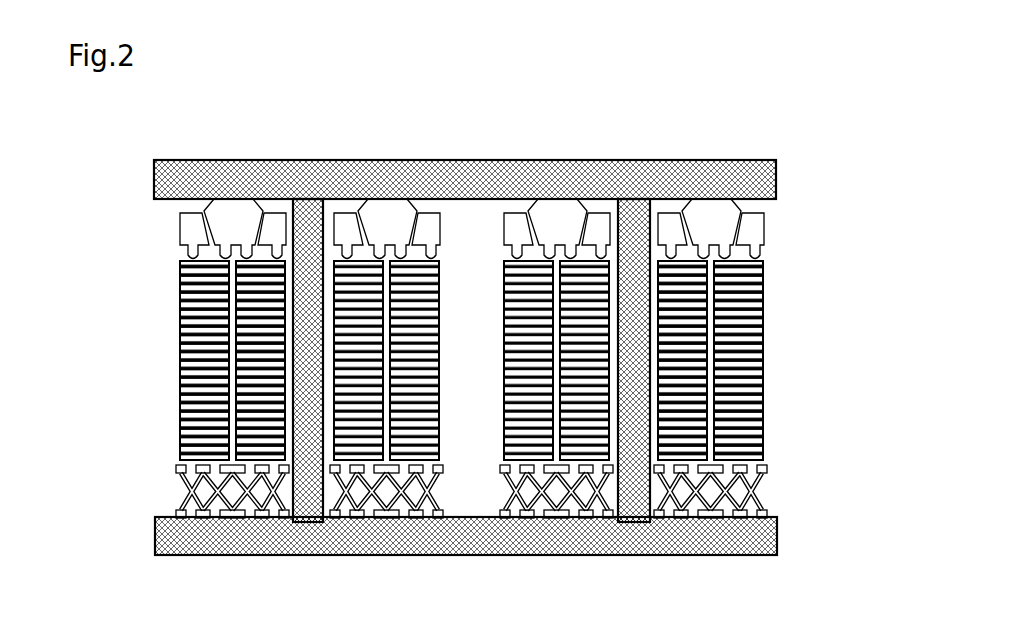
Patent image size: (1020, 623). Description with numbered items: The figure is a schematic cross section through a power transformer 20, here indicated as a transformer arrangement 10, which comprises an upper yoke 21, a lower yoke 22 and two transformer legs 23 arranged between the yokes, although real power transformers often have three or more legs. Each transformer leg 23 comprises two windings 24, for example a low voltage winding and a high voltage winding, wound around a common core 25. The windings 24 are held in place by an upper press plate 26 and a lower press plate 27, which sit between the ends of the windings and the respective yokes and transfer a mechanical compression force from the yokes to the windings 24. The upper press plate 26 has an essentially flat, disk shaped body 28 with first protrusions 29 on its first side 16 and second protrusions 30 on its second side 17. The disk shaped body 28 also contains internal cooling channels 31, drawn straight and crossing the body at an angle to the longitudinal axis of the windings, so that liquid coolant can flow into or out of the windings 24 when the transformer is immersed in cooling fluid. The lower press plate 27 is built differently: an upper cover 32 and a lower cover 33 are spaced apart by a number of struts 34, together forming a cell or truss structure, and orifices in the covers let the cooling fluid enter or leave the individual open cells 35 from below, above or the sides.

The thermoelectric device 10 is at (180, 233).
The first side 16 is at (777, 206).
The second side 17 is at (778, 256).
The power transformer 20 is at (752, 97).
The upper yoke 21 is at (778, 173).
The lower yoke 22 is at (780, 536).
The transformer leg 23 is at (104, 437).
The winding 24 is at (766, 307).
The core 25 is at (313, 512).
The upper press plate 26 is at (858, 229).
The lower press plate 27 is at (797, 493).
The disk shaped body 28 is at (766, 229).
The first protrusions 29 is at (542, 205).
The second protrusions 30 is at (505, 249).
The cooling channels 31 is at (349, 247).
The upper cover 32 is at (180, 468).
The lower cover 33 is at (180, 515).
The struts 34 is at (187, 487).
The open cells 35 is at (238, 492).